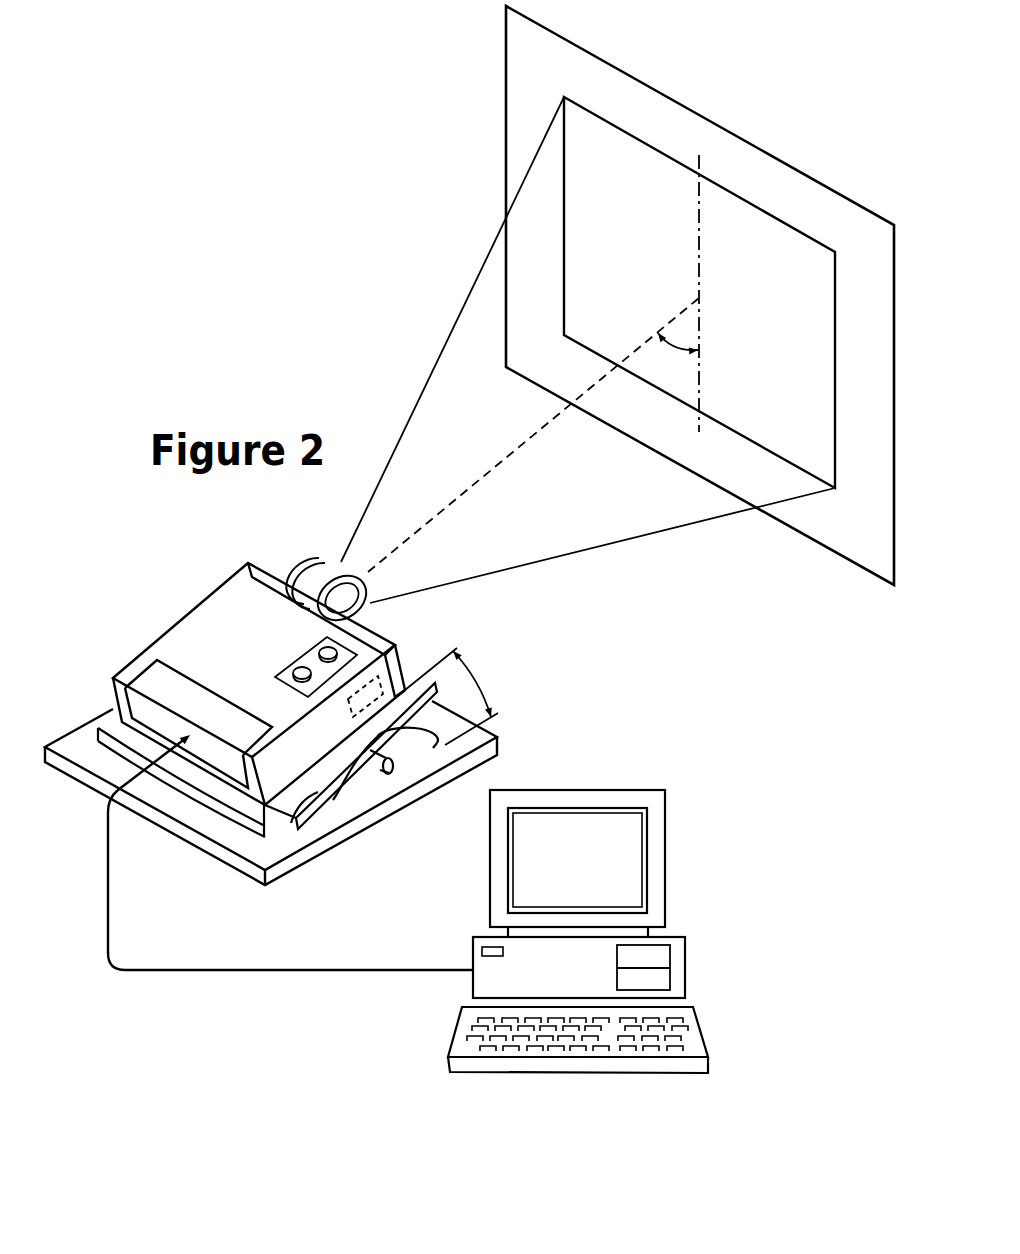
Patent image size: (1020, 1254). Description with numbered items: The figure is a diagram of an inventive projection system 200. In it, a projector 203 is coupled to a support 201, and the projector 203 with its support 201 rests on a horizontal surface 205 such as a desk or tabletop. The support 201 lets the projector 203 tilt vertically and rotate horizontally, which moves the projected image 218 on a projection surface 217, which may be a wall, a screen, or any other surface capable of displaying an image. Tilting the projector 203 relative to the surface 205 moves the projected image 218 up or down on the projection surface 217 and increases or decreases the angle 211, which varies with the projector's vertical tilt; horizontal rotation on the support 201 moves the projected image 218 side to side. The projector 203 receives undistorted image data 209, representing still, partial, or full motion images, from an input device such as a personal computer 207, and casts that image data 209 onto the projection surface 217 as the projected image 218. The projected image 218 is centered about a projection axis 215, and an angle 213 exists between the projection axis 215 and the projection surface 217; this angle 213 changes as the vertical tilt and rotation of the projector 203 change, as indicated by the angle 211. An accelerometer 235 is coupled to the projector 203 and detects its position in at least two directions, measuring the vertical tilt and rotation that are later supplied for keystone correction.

The projection system 200 is at (240, 165).
The support 201 is at (335, 806).
The projector 203 is at (188, 613).
The horizontal surface 205 is at (83, 735).
The personal computer 207 is at (585, 790).
The image data 209 is at (306, 968).
The angle 211 is at (475, 680).
The angle 213 is at (662, 352).
The projection axis 215 is at (503, 462).
The projection surface 217 is at (505, 126).
The projected image 218 is at (838, 453).
The accelerometer 235 is at (412, 658).